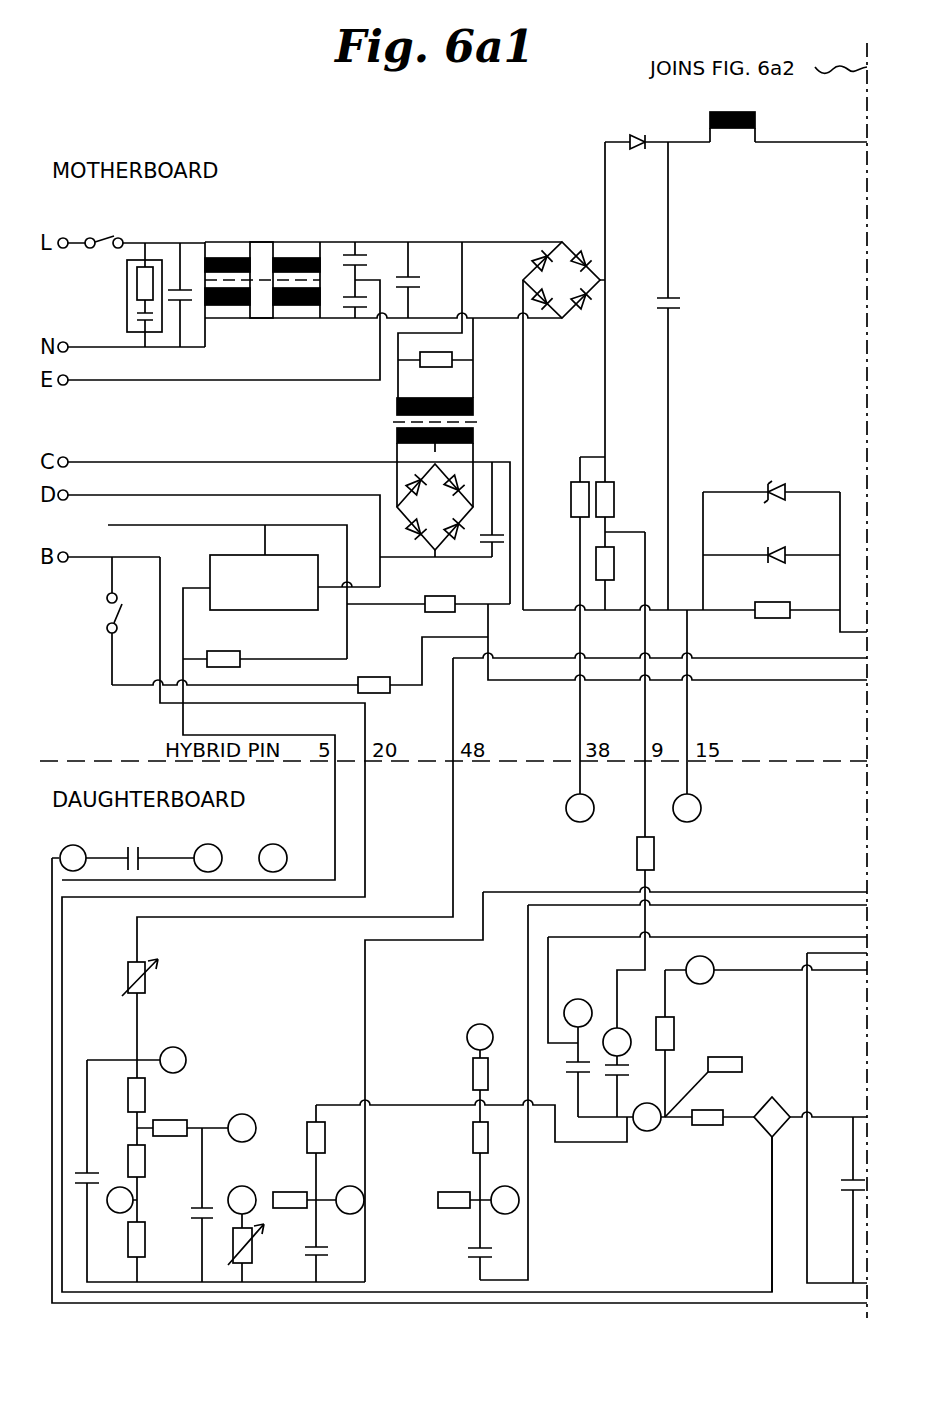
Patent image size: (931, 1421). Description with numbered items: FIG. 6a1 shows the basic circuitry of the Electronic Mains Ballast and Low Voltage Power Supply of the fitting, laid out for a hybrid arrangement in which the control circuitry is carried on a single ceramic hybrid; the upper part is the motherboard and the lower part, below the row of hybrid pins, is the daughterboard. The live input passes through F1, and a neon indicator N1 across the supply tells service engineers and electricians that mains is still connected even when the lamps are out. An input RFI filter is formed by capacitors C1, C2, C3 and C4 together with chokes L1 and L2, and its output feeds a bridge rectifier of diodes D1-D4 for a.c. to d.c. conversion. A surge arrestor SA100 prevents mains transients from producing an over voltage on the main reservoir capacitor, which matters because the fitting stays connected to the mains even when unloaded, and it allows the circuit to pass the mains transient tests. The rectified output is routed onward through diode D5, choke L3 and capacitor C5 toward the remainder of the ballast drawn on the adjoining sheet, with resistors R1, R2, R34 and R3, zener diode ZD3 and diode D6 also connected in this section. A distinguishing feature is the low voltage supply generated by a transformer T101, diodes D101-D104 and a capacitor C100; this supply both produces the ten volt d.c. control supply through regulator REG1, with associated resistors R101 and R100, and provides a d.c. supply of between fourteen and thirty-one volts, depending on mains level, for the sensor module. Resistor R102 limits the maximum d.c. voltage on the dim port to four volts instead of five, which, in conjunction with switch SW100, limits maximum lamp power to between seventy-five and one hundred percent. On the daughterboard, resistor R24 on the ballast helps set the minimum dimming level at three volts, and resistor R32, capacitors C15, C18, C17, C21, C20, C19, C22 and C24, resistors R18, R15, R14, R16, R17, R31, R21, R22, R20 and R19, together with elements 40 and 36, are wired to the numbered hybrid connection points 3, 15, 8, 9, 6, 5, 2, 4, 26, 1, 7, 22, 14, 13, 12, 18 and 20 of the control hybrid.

The fuse F1 is at (104, 230).
The neon indicator N1 is at (127, 295).
The capacitor C1 is at (190, 295).
The choke L1 is at (262, 273).
The choke L2 is at (296, 273).
The capacitor C3 is at (370, 269).
The capacitor C4 is at (342, 305).
The capacitor C2 is at (424, 280).
The bridge rectifier diodes D1-D4 is at (560, 276).
The diode D5 is at (657, 129).
The inductor L3 is at (788, 125).
The capacitor C5 is at (685, 303).
The surge arrestor SA100 is at (435, 373).
The transformer T101 is at (408, 451).
The diodes D101-D104 is at (432, 506).
The capacitor C100 is at (474, 523).
The regulator REG1 is at (264, 583).
The resistor R101 is at (265, 646).
The resistor R100 is at (442, 616).
The resistor R102 is at (382, 672).
The switch SW100 is at (77, 621).
The resistor R1 is at (566, 487).
The resistor R2 is at (622, 499).
The resistor R34 is at (622, 576).
The zener diode ZD3 is at (785, 542).
The diode D6 is at (771, 540).
The resistor R3 is at (772, 597).
The resistor R32 is at (669, 853).
The hybrid pin 3 is at (580, 808).
The hybrid pin 15 is at (687, 808).
The pin 8 is at (73, 858).
The pin 9 is at (208, 858).
The pin 6 is at (273, 858).
The capacitor C15 is at (133, 844).
The variable resistor R18 is at (156, 978).
The pin 5 is at (173, 1060).
The resistor R15 is at (118, 1095).
The resistor R14 is at (170, 1115).
The pin 2 is at (242, 1128).
The resistor R16 is at (159, 1161).
The capacitor C18 is at (103, 1164).
The pin 4 is at (120, 1200).
The resistor R17 is at (159, 1239).
The capacitor C17 is at (184, 1201).
The pin 26 is at (242, 1200).
The variable resistor R31 is at (262, 1244).
The resistor/pin 40 is at (290, 1188).
The pin 1 is at (350, 1200).
The resistor R21 is at (294, 1138).
The capacitor C21 is at (335, 1264).
The pin 7 is at (480, 1037).
The resistor R22 is at (459, 1074).
The resistor R20 is at (459, 1137).
The resistor/pin 36 is at (441, 1200).
The pin 22 is at (505, 1200).
The capacitor C20 is at (466, 1266).
The pin 14 is at (578, 1013).
The capacitor C19 is at (564, 1082).
The pin 13 / 5V sense 13 is at (690, 1072).
The capacitor C22 is at (634, 1085).
The pin 12 Vcc1 12 is at (655, 1129).
The resistor R19 is at (648, 1020).
The pin 18 Vcc2 18 is at (703, 980).
The resistor R24 is at (716, 1104).
The pin 20 is at (772, 1117).
The capacitor C24 is at (839, 1199).